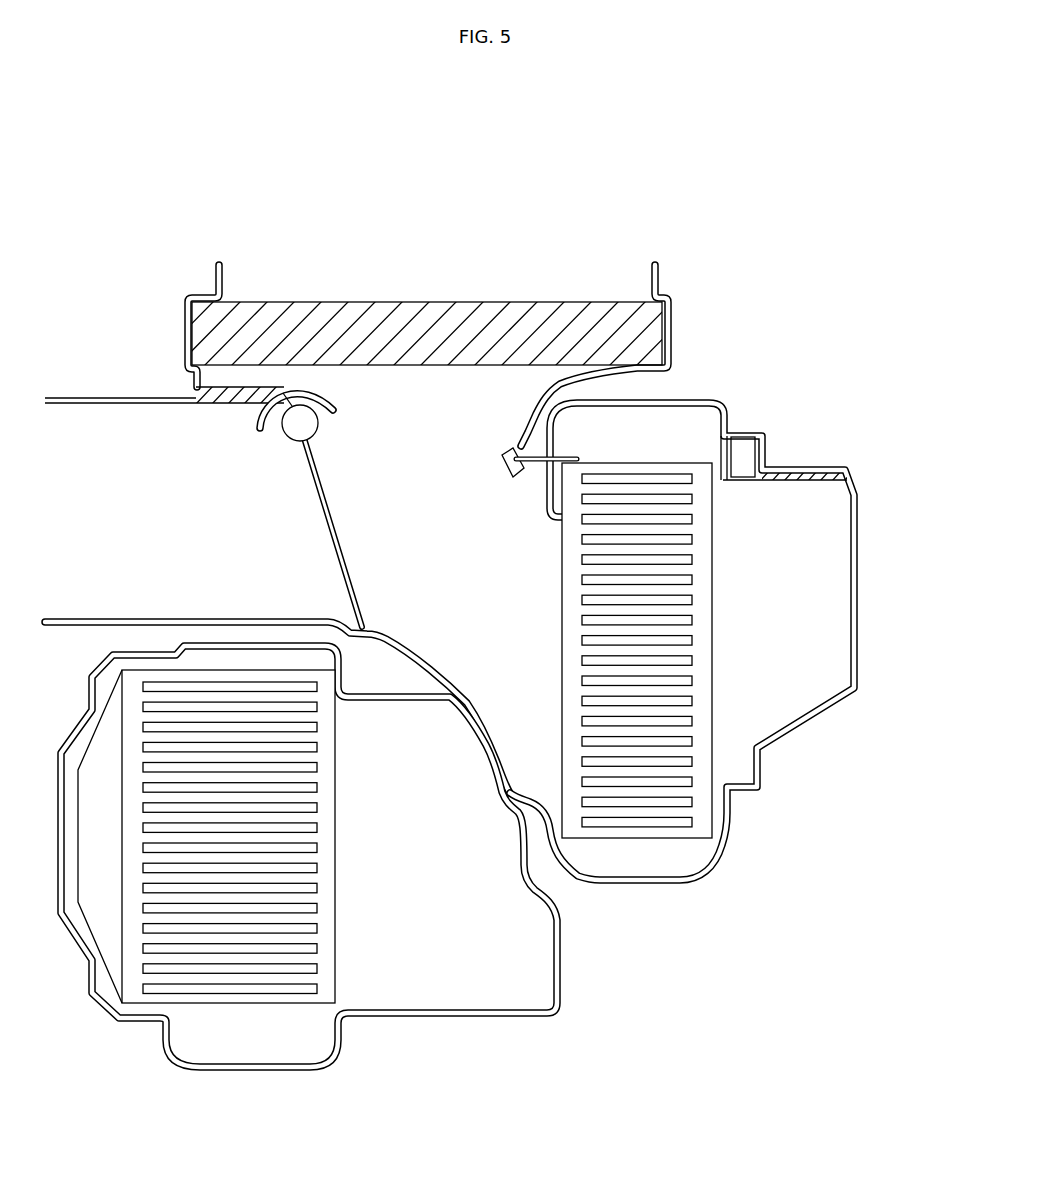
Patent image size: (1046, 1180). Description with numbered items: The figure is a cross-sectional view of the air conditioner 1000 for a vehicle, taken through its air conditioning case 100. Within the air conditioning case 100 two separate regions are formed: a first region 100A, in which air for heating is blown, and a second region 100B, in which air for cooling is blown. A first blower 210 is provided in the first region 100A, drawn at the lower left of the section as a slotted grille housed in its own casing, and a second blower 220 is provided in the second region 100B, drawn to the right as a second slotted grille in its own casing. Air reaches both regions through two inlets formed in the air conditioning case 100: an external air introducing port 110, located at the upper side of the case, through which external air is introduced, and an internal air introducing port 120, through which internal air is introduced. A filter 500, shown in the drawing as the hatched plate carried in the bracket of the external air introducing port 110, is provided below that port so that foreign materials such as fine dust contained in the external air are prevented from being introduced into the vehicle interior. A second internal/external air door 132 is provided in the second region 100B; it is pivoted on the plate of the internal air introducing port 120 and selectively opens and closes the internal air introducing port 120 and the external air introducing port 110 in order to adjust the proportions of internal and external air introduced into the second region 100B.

The air conditioner for a vehicle 1000 is at (142, 184).
The external air introducing port 110 is at (430, 284).
The second internal/external air door 132 is at (327, 490).
The filter 500 is at (558, 317).
The internal air introducing port 120 is at (147, 482).
The air conditioning case 100 is at (677, 403).
The first region 100A is at (520, 950).
The second region 100B is at (543, 640).
The first blower 210 is at (247, 1005).
The second blower 220 is at (707, 732).